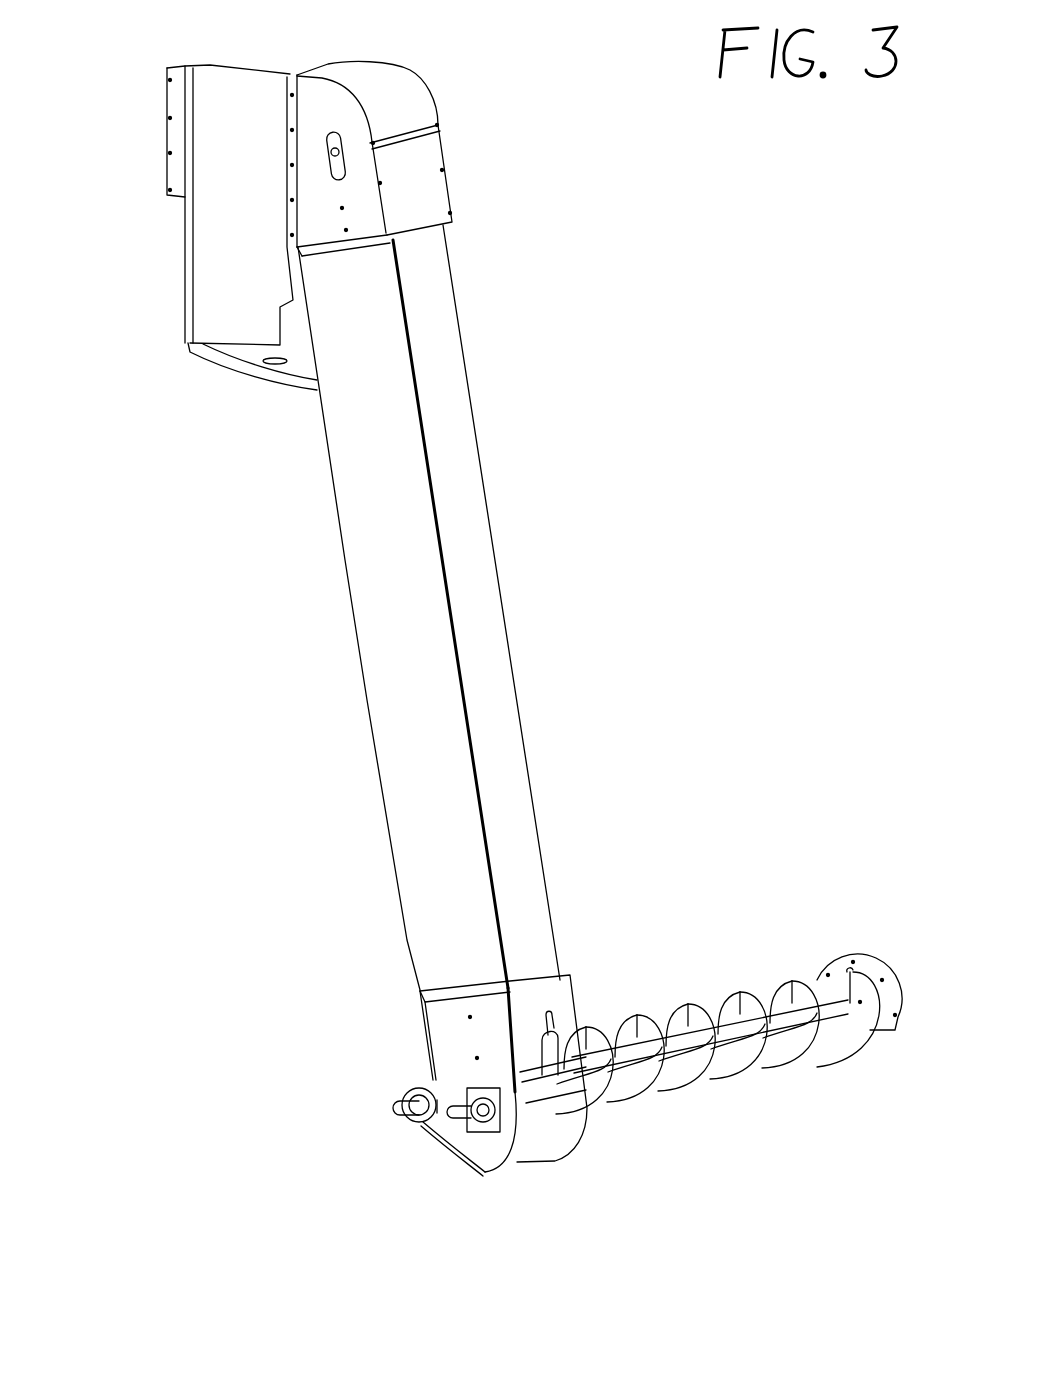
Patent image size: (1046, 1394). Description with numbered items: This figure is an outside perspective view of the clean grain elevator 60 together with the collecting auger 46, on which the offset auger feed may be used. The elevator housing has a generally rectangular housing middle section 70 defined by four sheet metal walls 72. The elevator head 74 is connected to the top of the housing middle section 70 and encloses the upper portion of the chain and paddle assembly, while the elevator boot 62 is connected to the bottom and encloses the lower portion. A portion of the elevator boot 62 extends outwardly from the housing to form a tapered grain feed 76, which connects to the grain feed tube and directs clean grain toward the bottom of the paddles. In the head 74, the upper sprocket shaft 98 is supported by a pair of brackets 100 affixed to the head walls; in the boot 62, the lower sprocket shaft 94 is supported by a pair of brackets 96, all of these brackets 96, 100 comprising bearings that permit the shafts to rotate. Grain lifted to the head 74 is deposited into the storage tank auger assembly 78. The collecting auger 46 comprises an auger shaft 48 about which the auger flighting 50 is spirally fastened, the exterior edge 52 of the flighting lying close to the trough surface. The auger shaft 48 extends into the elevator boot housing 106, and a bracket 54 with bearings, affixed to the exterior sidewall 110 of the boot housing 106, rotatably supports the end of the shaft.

The collecting auger 46 is at (730, 1038).
The auger shaft 48 is at (398, 1105).
The auger flighting 50 is at (837, 1043).
The exterior edge 52 is at (783, 1060).
The bracket 54 is at (437, 1115).
The clean grain elevator 60 is at (497, 587).
The elevator boot 62 is at (517, 1157).
The housing middle section 70 is at (370, 737).
The sheet metal walls 72 is at (512, 725).
The elevator head 74 is at (440, 185).
The tapered grain feed 76 is at (457, 1052).
The storage tank auger assembly 78 is at (207, 253).
The lower sprocket shaft 94 is at (470, 1122).
The brackets 96 is at (482, 1172).
The upper sprocket shaft 98 is at (340, 152).
The brackets 100 is at (336, 142).
The elevator boot housing 106 is at (535, 1160).
The exterior sidewall 110 is at (417, 1085).